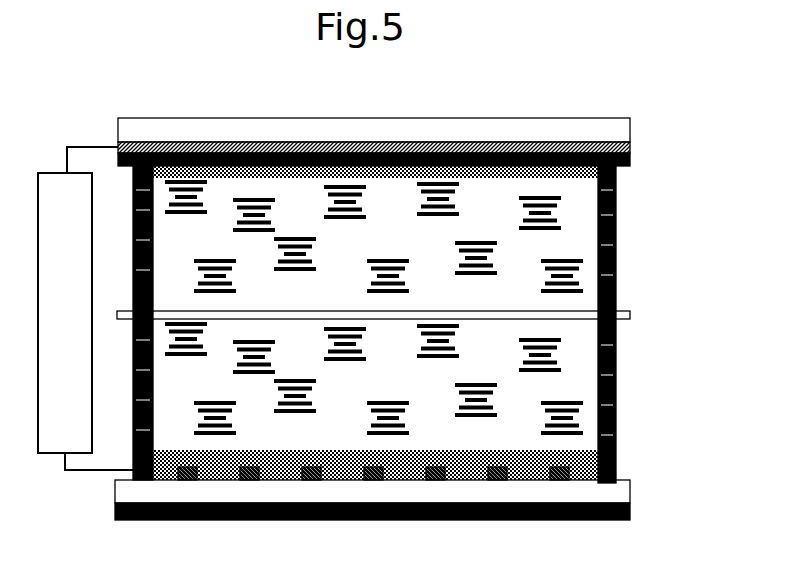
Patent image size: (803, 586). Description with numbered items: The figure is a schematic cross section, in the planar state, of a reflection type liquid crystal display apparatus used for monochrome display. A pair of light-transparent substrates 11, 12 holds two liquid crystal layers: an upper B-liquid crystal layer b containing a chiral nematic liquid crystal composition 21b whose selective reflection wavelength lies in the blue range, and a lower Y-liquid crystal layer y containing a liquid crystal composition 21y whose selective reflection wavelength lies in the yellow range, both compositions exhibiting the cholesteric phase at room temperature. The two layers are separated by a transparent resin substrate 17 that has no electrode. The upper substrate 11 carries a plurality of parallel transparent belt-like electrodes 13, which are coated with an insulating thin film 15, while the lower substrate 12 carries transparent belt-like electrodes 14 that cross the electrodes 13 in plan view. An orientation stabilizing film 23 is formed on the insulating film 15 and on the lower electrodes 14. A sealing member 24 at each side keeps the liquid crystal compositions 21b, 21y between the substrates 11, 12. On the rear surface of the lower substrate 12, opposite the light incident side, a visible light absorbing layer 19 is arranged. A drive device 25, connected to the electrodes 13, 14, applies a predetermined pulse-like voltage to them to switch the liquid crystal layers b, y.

The transparent substrate 11 is at (618, 133).
The transparent substrate 12 is at (615, 498).
The transparent belt-like electrodes 13 is at (630, 150).
The transparent belt-like electrodes 14 is at (616, 475).
The insulating thin film 15 is at (630, 163).
The transparent resin substrate 17 is at (630, 316).
The visible light absorbing layer 19 is at (630, 523).
The liquid crystal composition 21b is at (566, 214).
The liquid crystal composition 21y is at (583, 355).
The orientation stabilizing film 23 is at (548, 170).
The sealing member 24 is at (616, 277).
The drive device 25 is at (85, 308).
The B-liquid crystal layer b is at (585, 238).
The Y-liquid crystal layer y is at (584, 387).